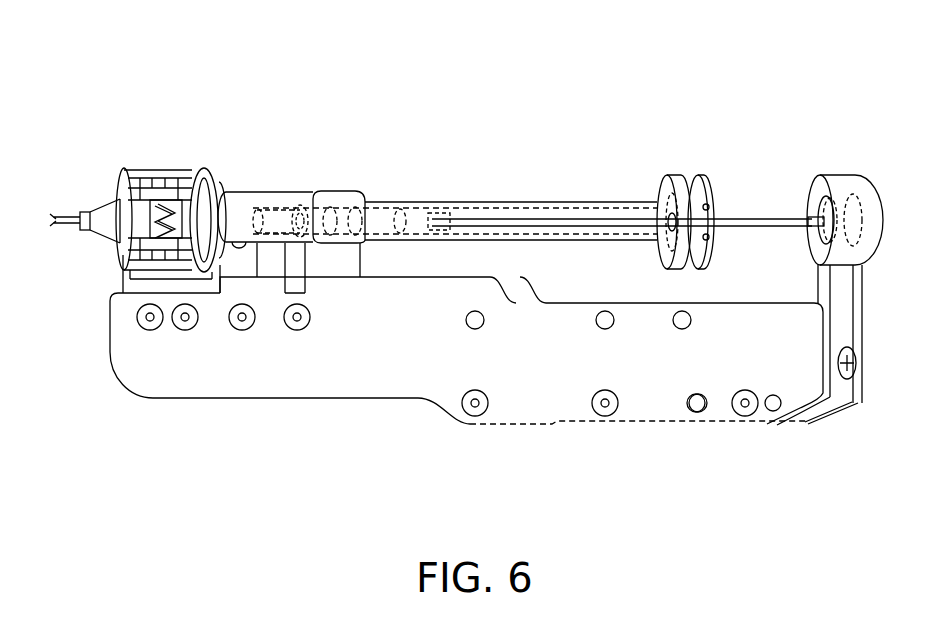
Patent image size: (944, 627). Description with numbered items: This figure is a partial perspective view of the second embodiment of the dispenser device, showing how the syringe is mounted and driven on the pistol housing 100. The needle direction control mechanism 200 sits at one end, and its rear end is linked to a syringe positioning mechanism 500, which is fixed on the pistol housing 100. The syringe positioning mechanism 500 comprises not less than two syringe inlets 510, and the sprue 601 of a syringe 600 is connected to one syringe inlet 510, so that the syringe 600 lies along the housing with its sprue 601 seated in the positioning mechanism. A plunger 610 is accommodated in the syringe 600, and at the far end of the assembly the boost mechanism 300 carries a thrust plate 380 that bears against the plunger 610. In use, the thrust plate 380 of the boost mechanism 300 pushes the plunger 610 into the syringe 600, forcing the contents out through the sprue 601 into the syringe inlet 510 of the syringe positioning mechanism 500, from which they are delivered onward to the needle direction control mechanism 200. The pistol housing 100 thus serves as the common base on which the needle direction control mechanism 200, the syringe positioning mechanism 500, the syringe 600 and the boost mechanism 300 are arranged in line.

The pistol housing 100 is at (113, 382).
The needle direction control mechanism 200 is at (187, 170).
The boost mechanism 300 is at (842, 259).
The thrust plate 380 is at (828, 182).
The syringe positioning mechanism 500 is at (365, 192).
The syringe inlet 510 is at (350, 197).
The syringe 600 is at (462, 202).
The sprue 601 is at (258, 215).
The plunger 610 is at (732, 215).